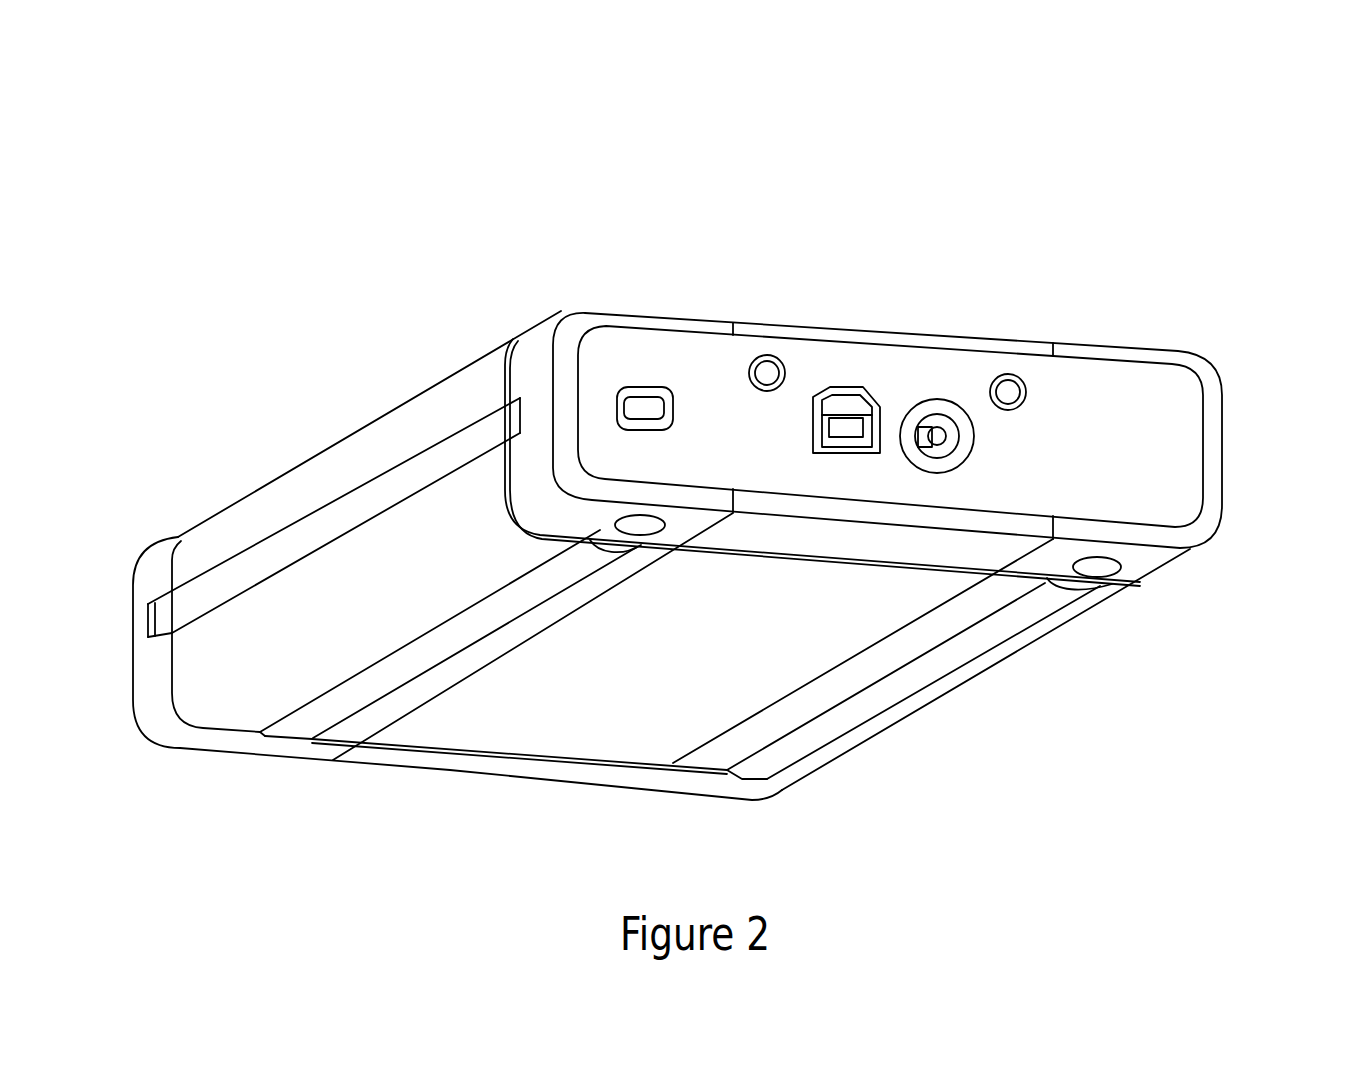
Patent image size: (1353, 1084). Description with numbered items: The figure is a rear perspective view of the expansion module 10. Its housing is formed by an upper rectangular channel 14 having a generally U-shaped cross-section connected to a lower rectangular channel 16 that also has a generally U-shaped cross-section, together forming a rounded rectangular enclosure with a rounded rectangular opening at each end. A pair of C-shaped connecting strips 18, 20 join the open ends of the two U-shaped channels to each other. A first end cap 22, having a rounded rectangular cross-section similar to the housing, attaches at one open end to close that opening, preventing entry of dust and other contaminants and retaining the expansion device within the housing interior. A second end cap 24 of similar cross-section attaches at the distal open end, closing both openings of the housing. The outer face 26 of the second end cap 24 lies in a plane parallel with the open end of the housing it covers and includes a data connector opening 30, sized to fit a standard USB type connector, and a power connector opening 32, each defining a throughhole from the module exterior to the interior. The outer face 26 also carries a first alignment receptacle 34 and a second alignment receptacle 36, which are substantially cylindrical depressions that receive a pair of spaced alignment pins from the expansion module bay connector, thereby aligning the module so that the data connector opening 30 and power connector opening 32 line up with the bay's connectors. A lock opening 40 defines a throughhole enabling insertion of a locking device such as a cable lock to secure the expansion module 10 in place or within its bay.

The expansion module 10 is at (1096, 176).
The upper rectangular channel 14 is at (350, 437).
The lower rectangular channel 16 is at (243, 668).
The C-shaped connecting strip 18 is at (270, 563).
The C-shaped connecting strip 20 is at (1222, 462).
The first end cap 22 is at (133, 587).
The second end cap 24 is at (1190, 352).
The outer face 26 is at (1113, 487).
The data connector opening 30 is at (841, 387).
The power connector opening 32 is at (938, 398).
The first alignment receptacle 34 is at (765, 356).
The second alignment receptacle 36 is at (1010, 373).
The lock opening 40 is at (627, 390).